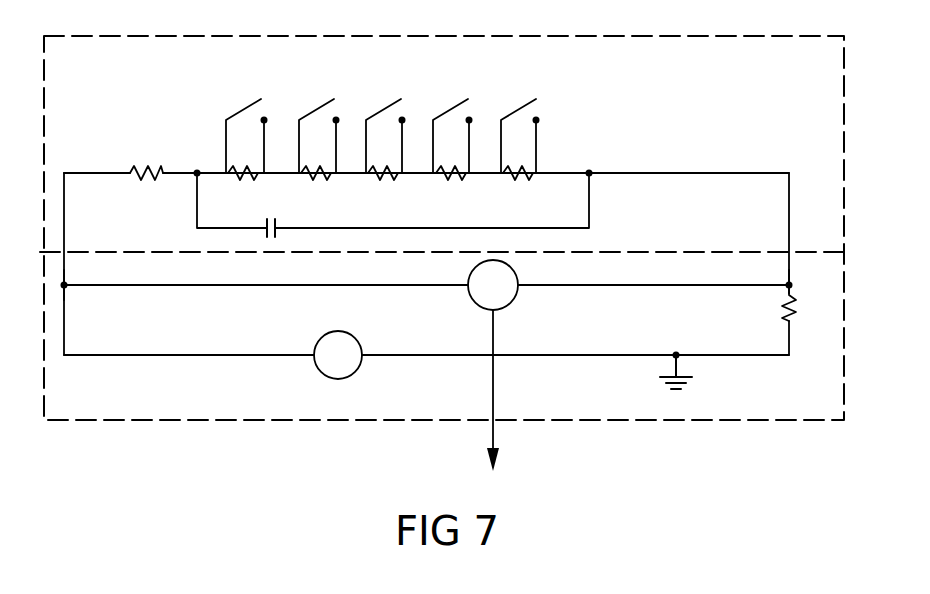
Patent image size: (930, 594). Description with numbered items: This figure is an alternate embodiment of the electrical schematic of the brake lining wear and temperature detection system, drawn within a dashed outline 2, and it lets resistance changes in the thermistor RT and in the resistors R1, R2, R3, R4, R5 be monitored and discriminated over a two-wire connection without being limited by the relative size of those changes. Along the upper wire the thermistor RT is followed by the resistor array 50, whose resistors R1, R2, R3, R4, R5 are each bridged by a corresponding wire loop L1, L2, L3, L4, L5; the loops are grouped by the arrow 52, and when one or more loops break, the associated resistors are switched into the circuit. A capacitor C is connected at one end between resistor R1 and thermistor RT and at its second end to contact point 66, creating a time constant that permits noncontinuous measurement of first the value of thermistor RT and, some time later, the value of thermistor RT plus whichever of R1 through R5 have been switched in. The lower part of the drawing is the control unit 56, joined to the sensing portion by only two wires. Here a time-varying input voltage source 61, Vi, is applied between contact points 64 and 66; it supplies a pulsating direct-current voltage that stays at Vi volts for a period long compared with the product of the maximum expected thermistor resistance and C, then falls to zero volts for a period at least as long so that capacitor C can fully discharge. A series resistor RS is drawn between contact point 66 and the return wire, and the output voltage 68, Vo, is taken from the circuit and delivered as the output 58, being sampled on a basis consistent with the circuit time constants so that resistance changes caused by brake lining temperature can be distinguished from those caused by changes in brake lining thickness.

The thermometer device housing 2 is at (815, 137).
The resistor array 50 is at (442, 169).
The switch array 52 is at (417, 117).
The control unit 56 is at (812, 342).
The output signal 58 is at (496, 428).
The time-varying input voltage source 61 is at (350, 331).
The contact point 64 is at (66, 287).
The contact point 66 is at (789, 285).
The output voltage 68 is at (512, 299).
The thermistor RT is at (133, 172).
The series resistor RS is at (787, 311).
The capacitor C is at (275, 226).
The resistor R1 is at (524, 186).
The resistor R2 is at (455, 182).
The resistor R3 is at (384, 182).
The resistor R4 is at (314, 181).
The resistor R5 is at (250, 182).
The wire loop L1 is at (518, 107).
The wire loop L2 is at (452, 106).
The wire loop L3 is at (383, 106).
The wire loop L4 is at (316, 106).
The wire loop L5 is at (254, 102).